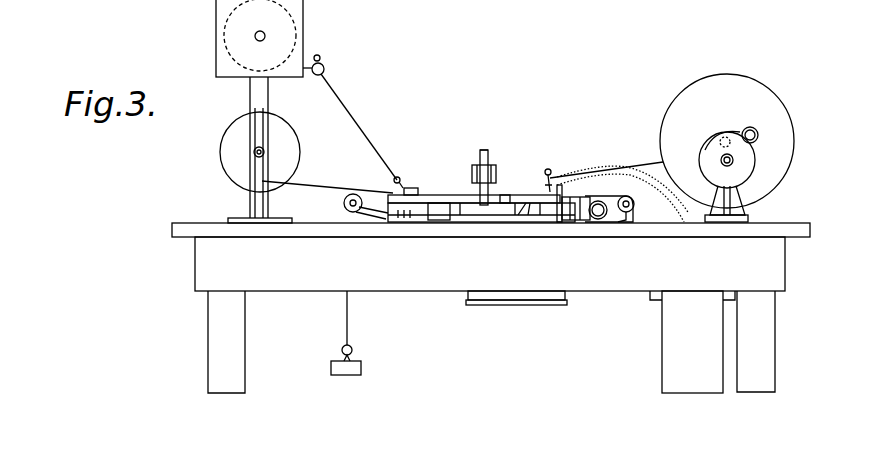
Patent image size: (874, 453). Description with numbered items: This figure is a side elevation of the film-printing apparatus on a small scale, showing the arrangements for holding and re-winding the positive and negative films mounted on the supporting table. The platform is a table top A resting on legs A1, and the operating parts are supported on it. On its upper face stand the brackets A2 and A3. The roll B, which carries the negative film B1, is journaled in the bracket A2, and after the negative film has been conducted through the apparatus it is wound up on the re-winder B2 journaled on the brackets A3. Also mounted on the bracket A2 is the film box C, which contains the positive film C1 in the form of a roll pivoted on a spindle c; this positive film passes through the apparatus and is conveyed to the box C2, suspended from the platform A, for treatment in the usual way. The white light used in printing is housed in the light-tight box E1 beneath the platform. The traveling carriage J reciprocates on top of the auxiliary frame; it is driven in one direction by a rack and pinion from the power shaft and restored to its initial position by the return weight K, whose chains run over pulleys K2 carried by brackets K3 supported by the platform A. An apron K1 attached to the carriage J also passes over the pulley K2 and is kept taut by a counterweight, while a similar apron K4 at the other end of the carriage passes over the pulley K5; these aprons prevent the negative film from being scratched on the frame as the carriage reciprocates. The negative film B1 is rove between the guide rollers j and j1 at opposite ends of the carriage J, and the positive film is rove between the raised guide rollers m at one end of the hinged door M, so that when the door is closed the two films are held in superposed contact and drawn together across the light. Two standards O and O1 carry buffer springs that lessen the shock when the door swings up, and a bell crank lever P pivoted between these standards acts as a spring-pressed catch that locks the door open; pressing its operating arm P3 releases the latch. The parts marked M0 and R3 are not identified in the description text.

The platform / table top A is at (810, 232).
The legs A1 is at (208, 346).
The bracket A2 is at (255, 193).
The bracket A3 is at (750, 213).
The roll B is at (222, 146).
The negative film B1 is at (332, 185).
The re-winder B2 is at (788, 133).
The film box C is at (303, 27).
The spindle c is at (255, 36).
The positive film C1 is at (360, 112).
The box C2 is at (662, 362).
The light-tight box E1 is at (487, 306).
The guide roller j is at (392, 184).
The guide roller j1 is at (558, 222).
The traveling carriage J is at (522, 195).
The return weight K is at (330, 368).
The apron K1 is at (346, 330).
The pulley K2 is at (349, 212).
The bracket K3 is at (366, 210).
The apron K4 is at (605, 180).
The pulley K5 is at (630, 212).
The raised guide rollers m is at (408, 187).
The hinged door M is at (432, 193).
The cord M0 is at (565, 180).
The standard O is at (510, 193).
The standard O1 is at (466, 193).
The bell crank lever P is at (490, 150).
The operating arm P3 is at (483, 148).
The roller R3 is at (598, 222).